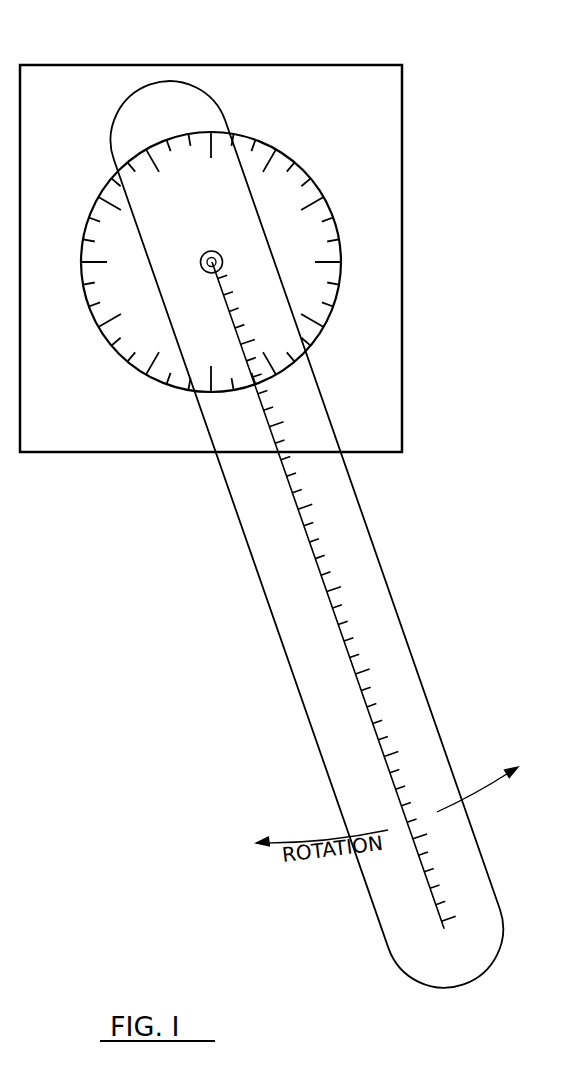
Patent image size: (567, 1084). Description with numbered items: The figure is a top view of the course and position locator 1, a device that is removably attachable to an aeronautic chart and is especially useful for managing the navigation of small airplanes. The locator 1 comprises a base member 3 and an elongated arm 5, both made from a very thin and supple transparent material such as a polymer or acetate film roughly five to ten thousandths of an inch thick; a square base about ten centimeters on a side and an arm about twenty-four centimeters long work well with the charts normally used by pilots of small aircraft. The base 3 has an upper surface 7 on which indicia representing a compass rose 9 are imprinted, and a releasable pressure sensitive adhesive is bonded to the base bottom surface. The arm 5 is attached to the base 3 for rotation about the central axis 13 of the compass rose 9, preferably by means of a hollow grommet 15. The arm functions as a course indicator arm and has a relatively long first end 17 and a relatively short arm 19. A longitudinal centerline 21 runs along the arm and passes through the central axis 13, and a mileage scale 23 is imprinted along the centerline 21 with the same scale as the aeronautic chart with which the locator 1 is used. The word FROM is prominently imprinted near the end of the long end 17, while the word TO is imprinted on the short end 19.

The course and position locator 1 is at (160, 483).
The base member 3 is at (405, 170).
The elongated arm 5 is at (308, 534).
The upper surface 7 is at (388, 242).
The compass rose 9 is at (350, 293).
The central axis 13 is at (218, 251).
The hollow grommet 15 is at (220, 272).
The first end 17 is at (448, 975).
The short arm 19 is at (177, 97).
The longitudinal centerline 21 is at (335, 593).
The mileage scale 23 is at (414, 655).